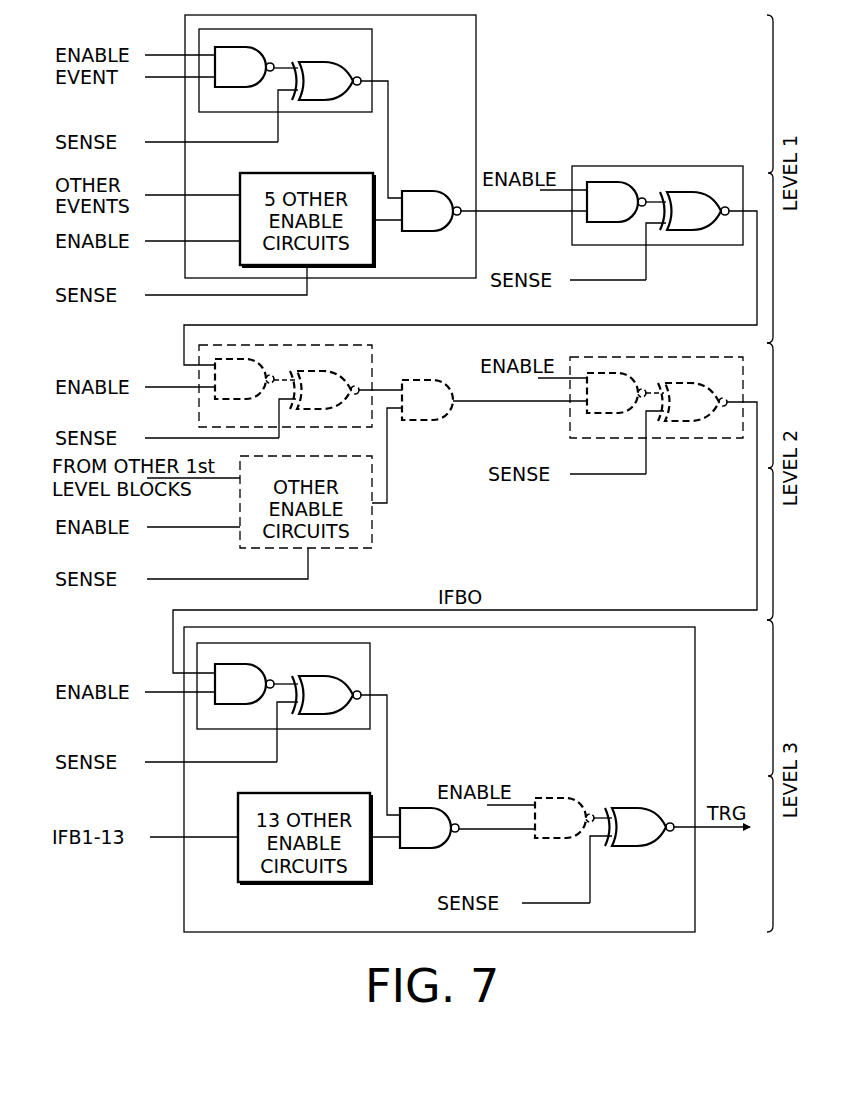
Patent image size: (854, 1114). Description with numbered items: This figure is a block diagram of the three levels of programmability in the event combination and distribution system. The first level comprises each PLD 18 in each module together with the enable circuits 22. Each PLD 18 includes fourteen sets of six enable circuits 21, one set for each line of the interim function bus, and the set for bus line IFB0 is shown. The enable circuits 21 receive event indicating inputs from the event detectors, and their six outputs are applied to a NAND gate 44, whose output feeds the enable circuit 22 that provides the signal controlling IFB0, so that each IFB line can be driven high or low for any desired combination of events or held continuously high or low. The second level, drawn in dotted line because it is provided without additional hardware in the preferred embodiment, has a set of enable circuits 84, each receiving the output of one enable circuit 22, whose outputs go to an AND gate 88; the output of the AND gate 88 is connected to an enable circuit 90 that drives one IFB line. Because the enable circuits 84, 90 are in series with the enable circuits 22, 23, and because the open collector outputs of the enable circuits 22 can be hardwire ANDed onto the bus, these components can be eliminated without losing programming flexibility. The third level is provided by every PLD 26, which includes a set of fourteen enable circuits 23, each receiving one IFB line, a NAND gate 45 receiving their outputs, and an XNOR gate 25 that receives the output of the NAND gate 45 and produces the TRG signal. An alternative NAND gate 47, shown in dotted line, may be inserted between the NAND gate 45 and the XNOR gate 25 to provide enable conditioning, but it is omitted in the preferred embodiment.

The PLD 18 is at (388, 280).
The enable circuits 21 is at (402, 72).
The NAND gate 44 is at (428, 191).
The enable circuit 22 is at (645, 166).
The enable circuits 84 is at (437, 375).
The AND gate 88 is at (413, 420).
The enable circuit 90 is at (648, 357).
The PLD 26 is at (184, 900).
The enable circuits 23 is at (405, 690).
The NAND gate 45 is at (420, 848).
The NAND gate 47 is at (579, 805).
The XNOR gate 25 is at (653, 808).